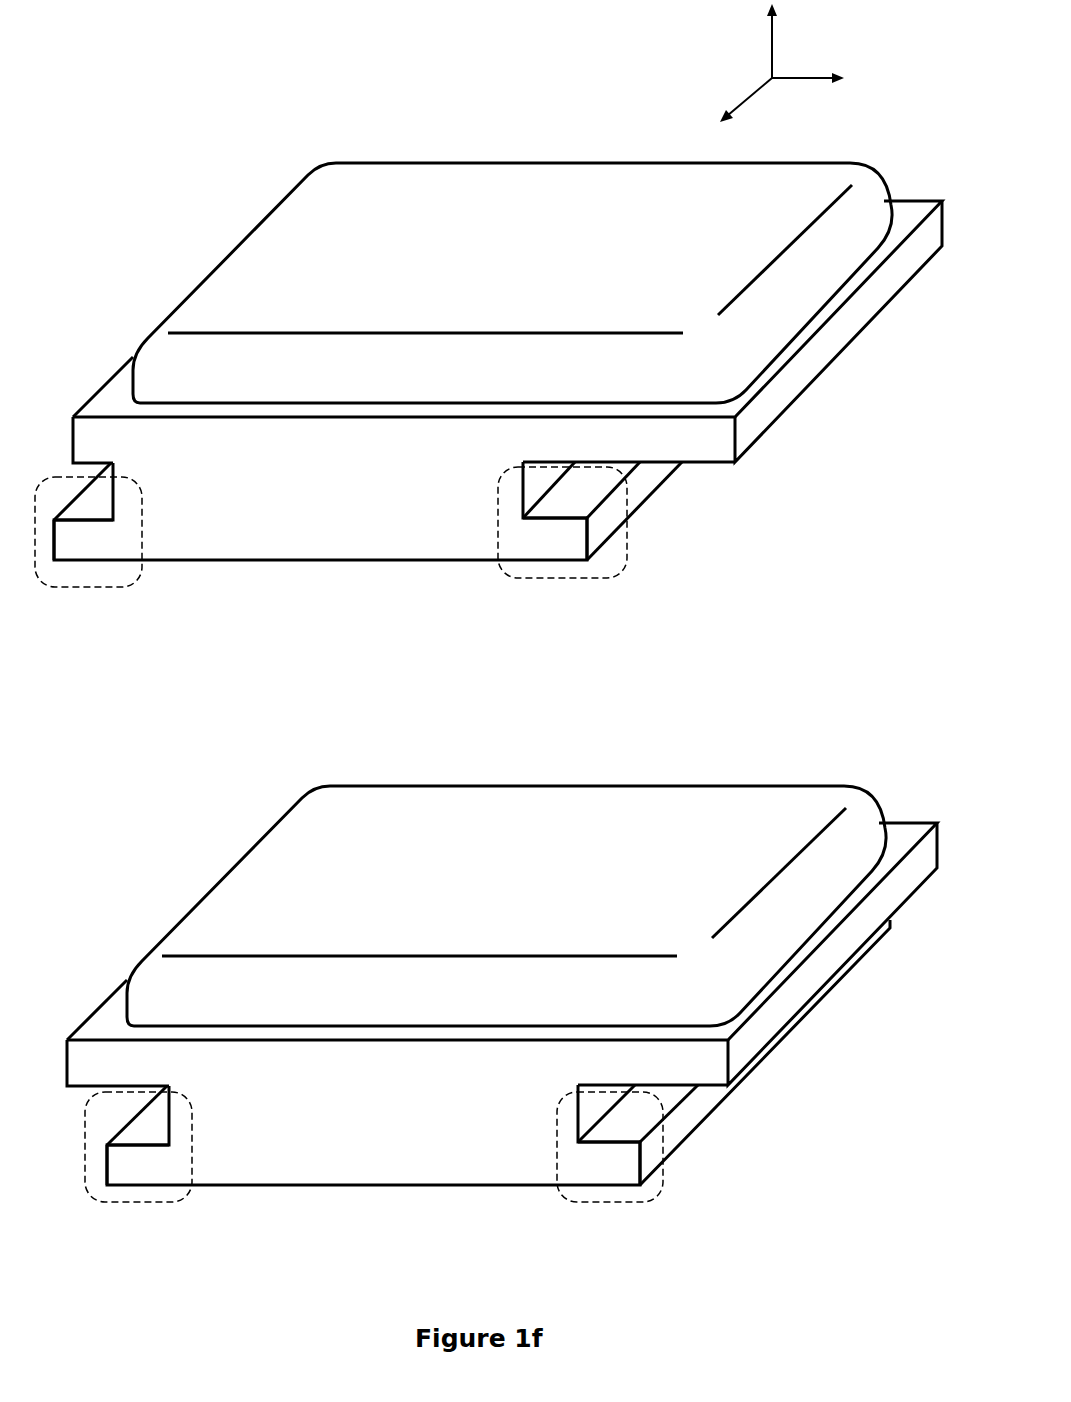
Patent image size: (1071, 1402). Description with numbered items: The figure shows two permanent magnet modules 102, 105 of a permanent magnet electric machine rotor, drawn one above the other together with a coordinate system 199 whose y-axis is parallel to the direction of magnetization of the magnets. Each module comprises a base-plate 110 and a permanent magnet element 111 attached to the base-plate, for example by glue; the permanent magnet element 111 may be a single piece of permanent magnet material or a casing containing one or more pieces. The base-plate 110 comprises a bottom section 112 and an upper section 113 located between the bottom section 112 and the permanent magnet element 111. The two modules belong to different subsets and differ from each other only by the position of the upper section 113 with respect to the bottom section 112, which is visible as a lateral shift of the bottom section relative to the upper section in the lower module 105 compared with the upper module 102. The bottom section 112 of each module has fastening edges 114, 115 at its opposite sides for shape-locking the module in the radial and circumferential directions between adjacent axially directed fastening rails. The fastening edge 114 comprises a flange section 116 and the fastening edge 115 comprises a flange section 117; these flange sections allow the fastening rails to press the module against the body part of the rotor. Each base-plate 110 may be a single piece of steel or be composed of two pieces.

The permanent magnet module 102 is at (156, 245).
The permanent magnet module 105 is at (187, 851).
The base-plate 110 is at (343, 561).
The permanent magnet element 111 is at (471, 272).
The bottom section 112 is at (788, 463).
The upper section 113 is at (788, 417).
The fastening edge 114 is at (107, 583).
The fastening edge 115 is at (595, 579).
The flange section 116 is at (72, 538).
The flange section 117 is at (559, 535).
The coordinate system 199 is at (824, 59).